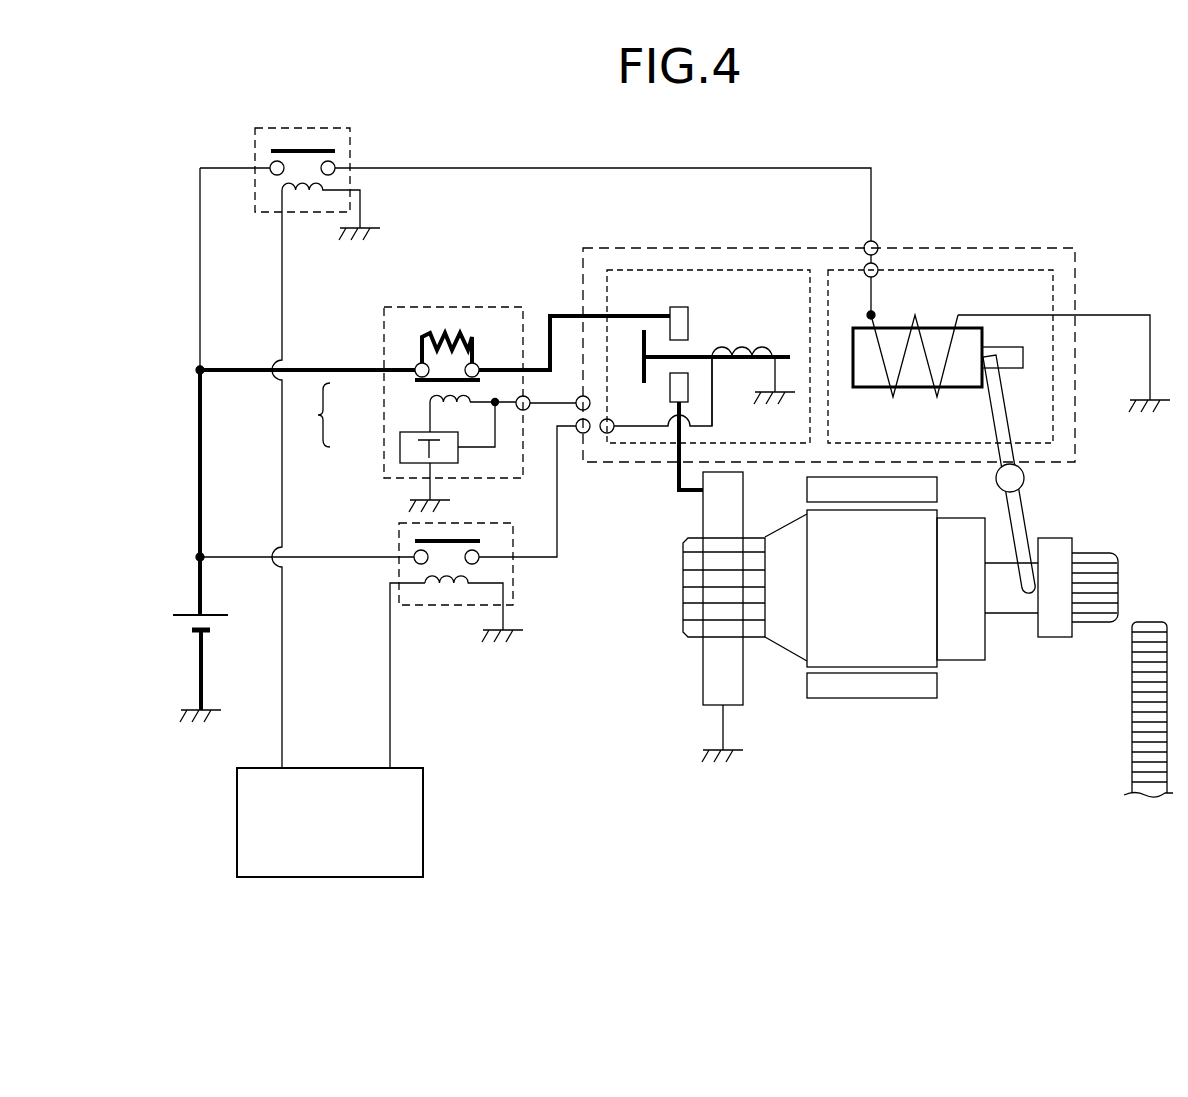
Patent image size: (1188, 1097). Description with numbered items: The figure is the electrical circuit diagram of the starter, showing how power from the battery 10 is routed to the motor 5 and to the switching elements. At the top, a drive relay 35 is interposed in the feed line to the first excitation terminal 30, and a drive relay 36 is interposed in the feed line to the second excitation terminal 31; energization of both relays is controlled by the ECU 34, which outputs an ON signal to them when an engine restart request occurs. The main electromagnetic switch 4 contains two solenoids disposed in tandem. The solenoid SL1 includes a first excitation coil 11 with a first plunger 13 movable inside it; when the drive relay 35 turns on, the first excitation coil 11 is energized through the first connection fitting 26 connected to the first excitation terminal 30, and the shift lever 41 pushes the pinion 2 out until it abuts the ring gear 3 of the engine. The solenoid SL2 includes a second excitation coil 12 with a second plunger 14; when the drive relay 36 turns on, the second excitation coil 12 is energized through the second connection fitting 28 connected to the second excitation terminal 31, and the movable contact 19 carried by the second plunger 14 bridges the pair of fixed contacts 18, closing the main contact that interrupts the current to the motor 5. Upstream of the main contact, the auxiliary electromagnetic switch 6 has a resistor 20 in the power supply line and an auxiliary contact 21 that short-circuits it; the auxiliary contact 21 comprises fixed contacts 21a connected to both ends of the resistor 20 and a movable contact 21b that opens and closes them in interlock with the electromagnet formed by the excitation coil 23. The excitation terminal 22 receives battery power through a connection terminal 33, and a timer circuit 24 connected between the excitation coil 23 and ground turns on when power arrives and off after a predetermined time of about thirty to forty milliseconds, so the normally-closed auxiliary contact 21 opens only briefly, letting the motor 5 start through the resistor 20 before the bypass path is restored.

The pinion 2 is at (1103, 565).
The ring gear 3 is at (1140, 695).
The main electromagnetic switch 4 is at (908, 248).
The motor 5 is at (921, 710).
The auxiliary electromagnetic switch 6 is at (418, 300).
The battery 10 is at (217, 622).
The first excitation coil 11 is at (923, 335).
The second excitation coil 12 is at (745, 343).
The first plunger 13 is at (912, 370).
The second plunger 14 is at (725, 360).
The fixed contacts 18 is at (678, 305).
The movable contact 19 is at (644, 345).
The resistor 20 is at (470, 337).
The auxiliary contact 21 is at (384, 405).
The fixed contacts 21a is at (415, 375).
The movable contact 21b is at (430, 385).
The excitation terminal 22 is at (525, 410).
The excitation coil 23 is at (457, 397).
The timer circuit 24 is at (410, 453).
The first connection fitting 26 is at (866, 268).
The second connection fitting 28 is at (607, 433).
The first excitation terminal 30 is at (866, 246).
The second excitation terminal 31 is at (583, 433).
The connection terminal 33 is at (580, 396).
The ECU 34 is at (423, 830).
The drive relay 35 is at (352, 130).
The drive relay 36 is at (513, 580).
The shift lever 41 is at (1015, 510).
The solenoid SL1 is at (1004, 268).
The solenoid SL2 is at (718, 268).